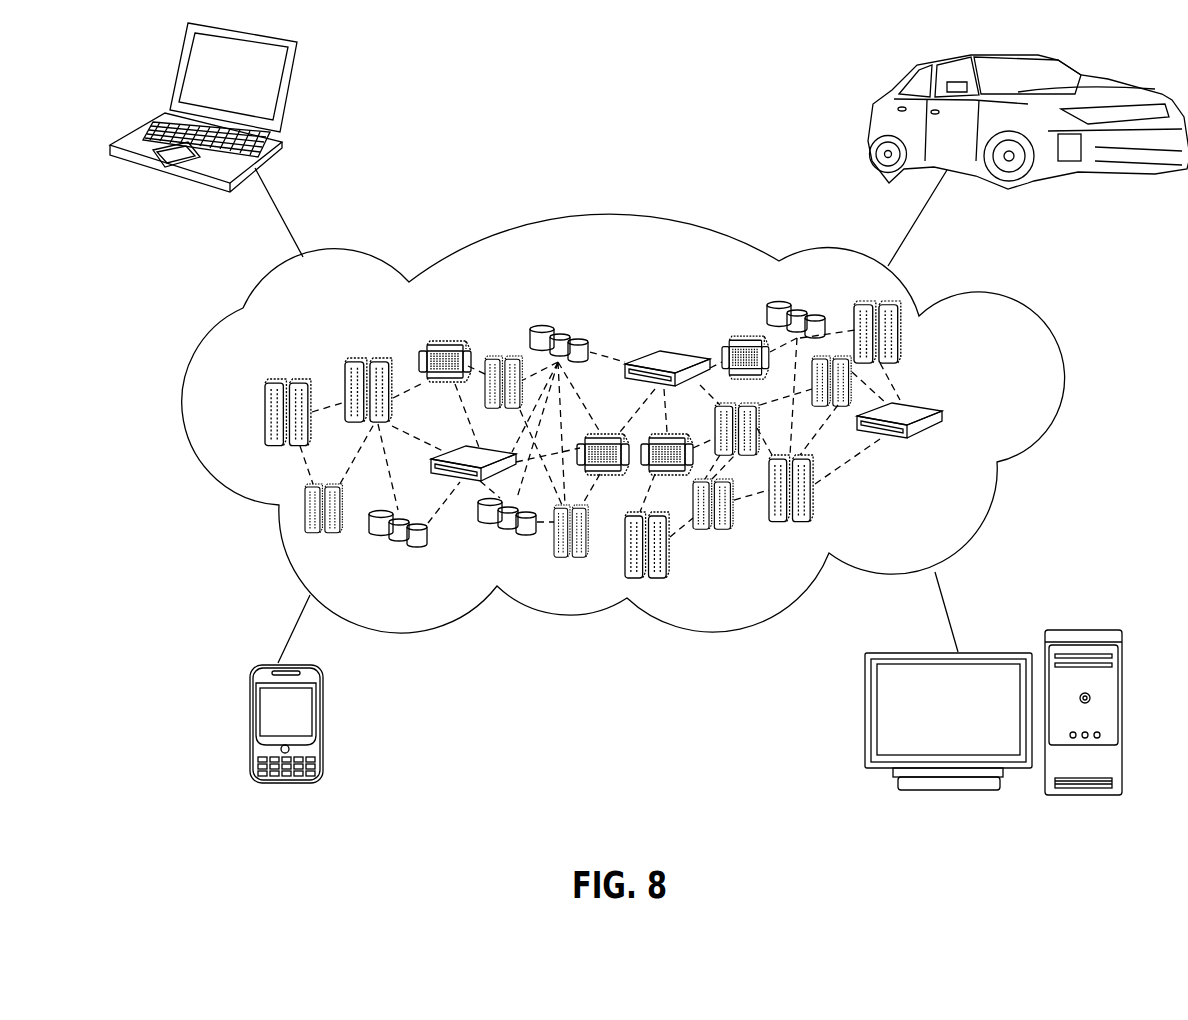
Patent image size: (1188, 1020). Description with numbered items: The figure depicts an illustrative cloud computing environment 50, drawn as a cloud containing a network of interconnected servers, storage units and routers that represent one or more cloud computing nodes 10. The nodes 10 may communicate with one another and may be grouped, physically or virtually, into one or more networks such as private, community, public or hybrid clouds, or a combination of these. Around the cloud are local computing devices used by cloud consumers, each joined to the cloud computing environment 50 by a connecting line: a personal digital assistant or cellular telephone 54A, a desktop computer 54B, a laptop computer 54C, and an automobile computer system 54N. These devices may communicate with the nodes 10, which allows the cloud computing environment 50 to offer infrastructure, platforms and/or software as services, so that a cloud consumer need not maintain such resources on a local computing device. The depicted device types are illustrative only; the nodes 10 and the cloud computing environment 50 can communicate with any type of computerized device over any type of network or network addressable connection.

The cloud computing node 10 is at (986, 414).
The cloud computing environment 50 is at (1007, 327).
The personal digital assistant or cellular telephone 54A is at (250, 731).
The desktop computer 54B is at (1088, 627).
The laptop computer 54C is at (293, 92).
The automobile computer system 54N is at (877, 105).